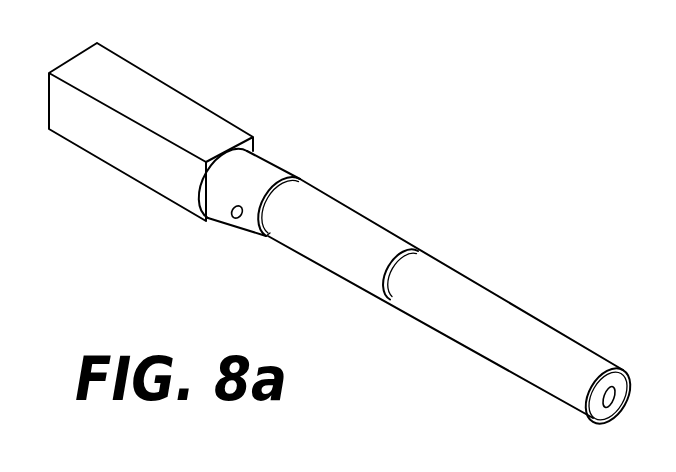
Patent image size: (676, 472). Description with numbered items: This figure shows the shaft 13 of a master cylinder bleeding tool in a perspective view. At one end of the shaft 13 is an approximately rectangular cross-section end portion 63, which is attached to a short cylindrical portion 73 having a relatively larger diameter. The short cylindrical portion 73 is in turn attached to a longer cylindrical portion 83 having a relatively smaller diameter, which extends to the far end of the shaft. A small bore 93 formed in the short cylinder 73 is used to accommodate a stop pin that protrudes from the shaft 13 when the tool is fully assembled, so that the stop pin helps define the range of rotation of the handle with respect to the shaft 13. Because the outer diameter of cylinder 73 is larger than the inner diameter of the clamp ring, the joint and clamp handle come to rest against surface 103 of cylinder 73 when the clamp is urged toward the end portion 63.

The shaft 13 is at (344, 230).
The rectangular cross-section end portion 63 is at (150, 92).
The short cylindrical portion 73 is at (262, 156).
The longer cylindrical portion 83 is at (340, 207).
The small bore 93 is at (227, 219).
The surface 103 is at (267, 243).